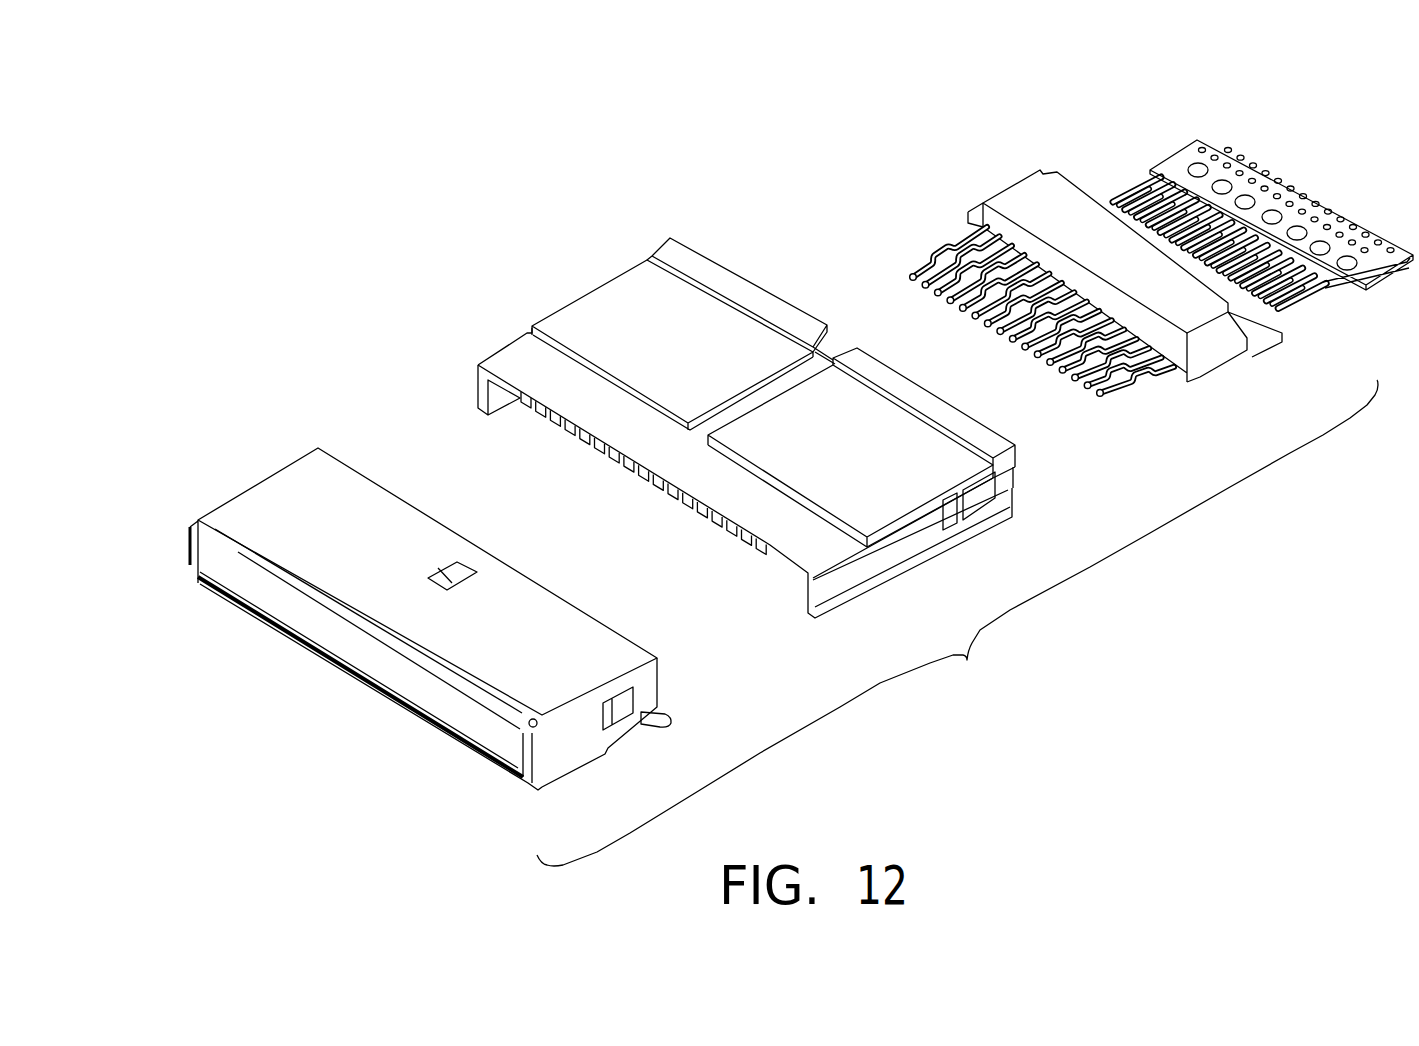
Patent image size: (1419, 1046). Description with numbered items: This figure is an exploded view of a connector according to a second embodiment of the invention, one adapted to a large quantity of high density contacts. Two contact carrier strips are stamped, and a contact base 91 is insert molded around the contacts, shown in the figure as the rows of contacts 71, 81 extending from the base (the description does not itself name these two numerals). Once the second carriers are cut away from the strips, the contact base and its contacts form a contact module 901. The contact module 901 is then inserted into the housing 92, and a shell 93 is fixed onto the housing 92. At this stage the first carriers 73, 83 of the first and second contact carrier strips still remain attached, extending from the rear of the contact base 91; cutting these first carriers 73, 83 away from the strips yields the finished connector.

The contact module 901 is at (1072, 112).
The contact base 91 is at (1020, 208).
The housing 92 is at (631, 282).
The shell 93 is at (283, 500).
The first contacts 71 is at (1136, 366).
The second contacts 81 is at (1126, 384).
The first carrier 73 is at (1200, 143).
The first carrier 83 is at (1225, 143).